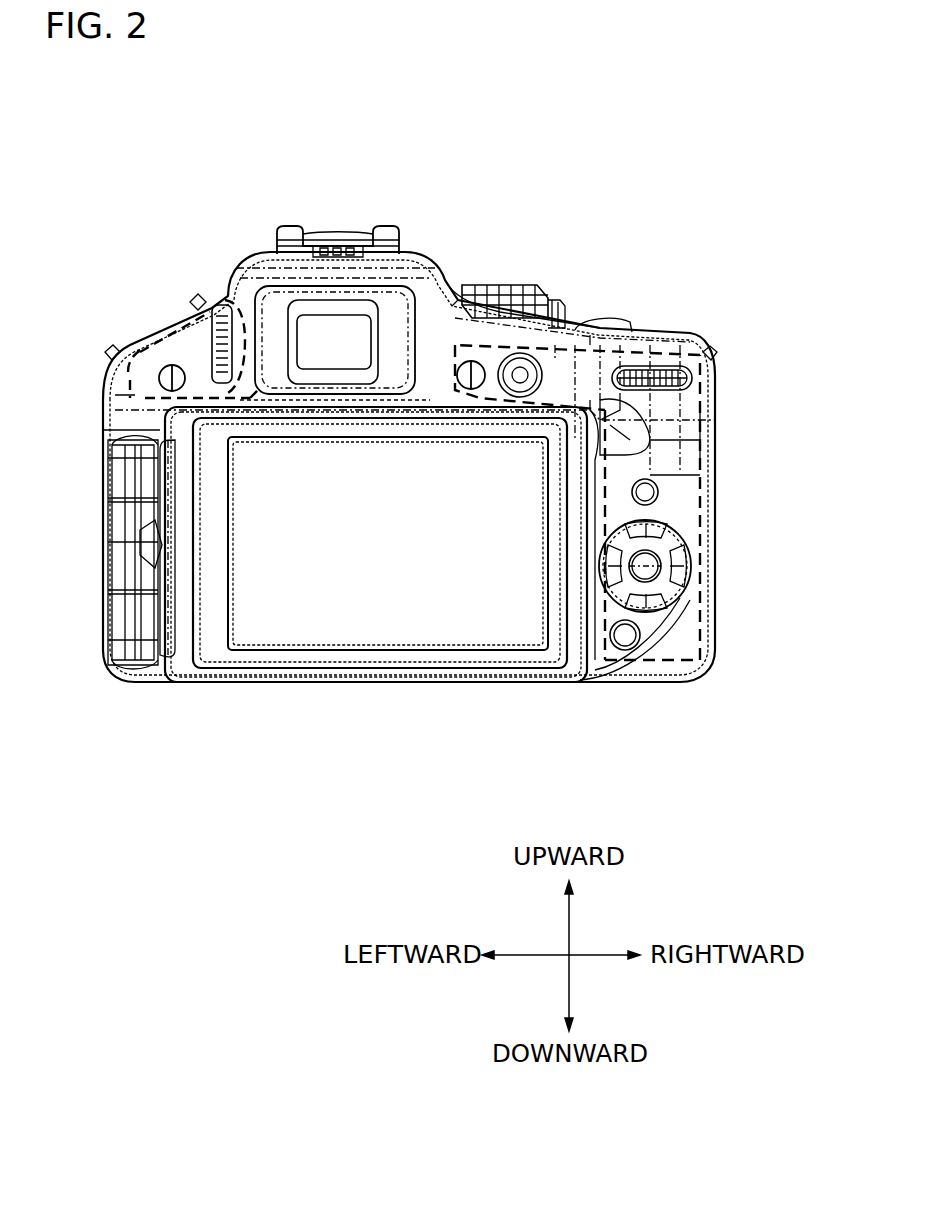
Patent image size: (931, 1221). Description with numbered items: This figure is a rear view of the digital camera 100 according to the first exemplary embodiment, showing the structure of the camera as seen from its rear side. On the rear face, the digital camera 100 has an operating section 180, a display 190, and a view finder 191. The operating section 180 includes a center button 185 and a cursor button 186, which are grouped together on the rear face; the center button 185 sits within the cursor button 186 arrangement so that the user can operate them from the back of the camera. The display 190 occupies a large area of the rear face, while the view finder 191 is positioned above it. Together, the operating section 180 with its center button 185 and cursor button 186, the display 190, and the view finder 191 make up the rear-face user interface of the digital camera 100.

The digital camera 100 is at (630, 238).
The operating section 180 is at (133, 355).
The center button 185 is at (645, 562).
The cursor button 186 is at (632, 598).
The display 190 is at (305, 633).
The view finder 191 is at (310, 334).